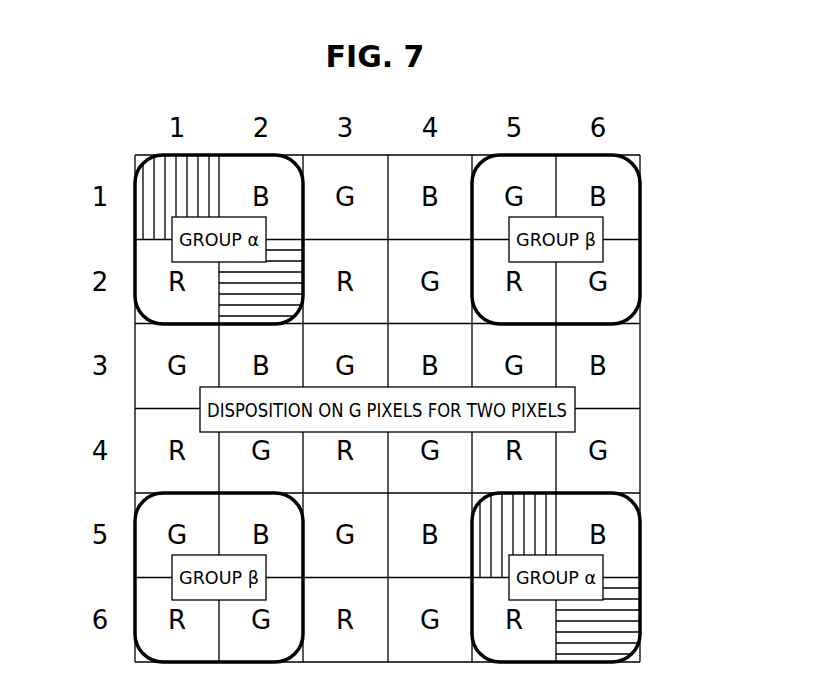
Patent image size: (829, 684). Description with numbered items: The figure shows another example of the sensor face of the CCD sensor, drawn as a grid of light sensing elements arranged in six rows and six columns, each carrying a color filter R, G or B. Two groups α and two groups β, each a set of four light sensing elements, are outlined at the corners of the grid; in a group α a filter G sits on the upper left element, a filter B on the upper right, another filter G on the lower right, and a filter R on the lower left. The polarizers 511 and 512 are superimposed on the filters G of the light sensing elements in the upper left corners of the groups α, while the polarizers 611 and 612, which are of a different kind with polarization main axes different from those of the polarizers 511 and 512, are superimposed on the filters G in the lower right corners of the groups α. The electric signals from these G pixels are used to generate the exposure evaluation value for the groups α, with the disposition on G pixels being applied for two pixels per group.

The polarizer 511 is at (158, 191).
The polarizer 512 is at (537, 517).
The polarizer 611 is at (240, 301).
The polarizer 612 is at (613, 624).